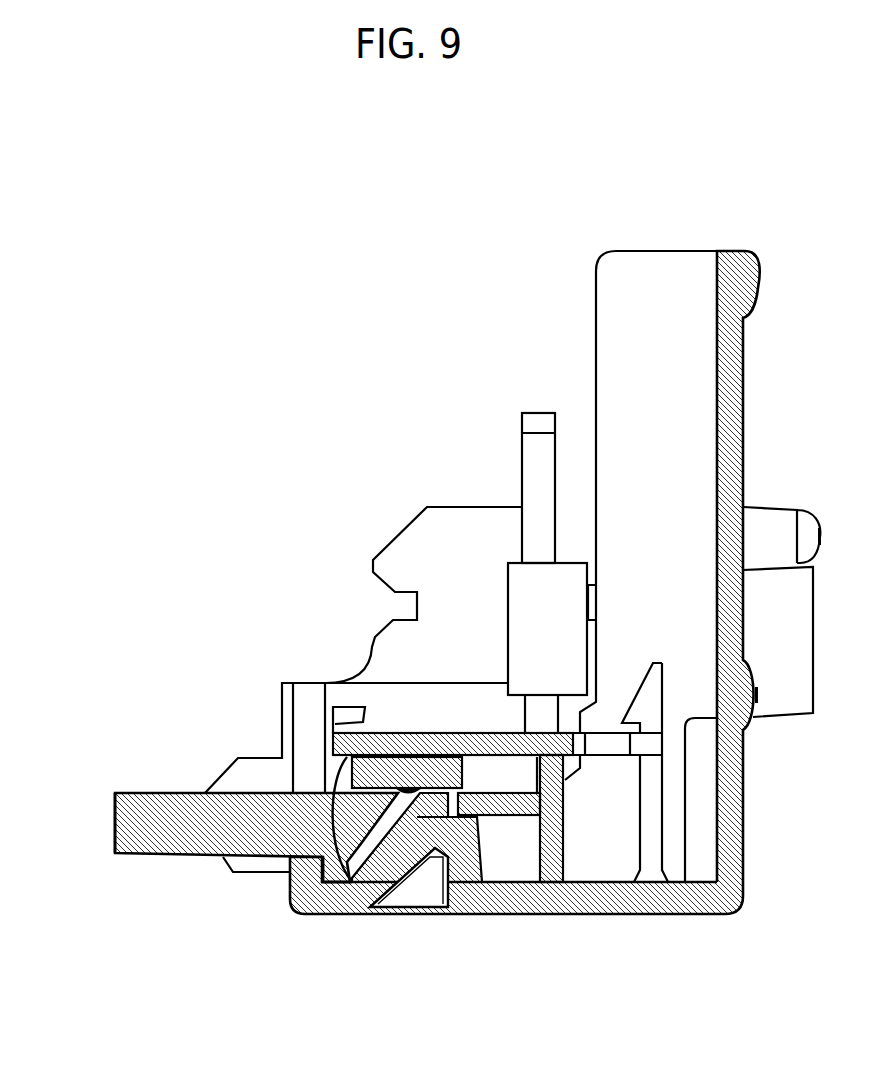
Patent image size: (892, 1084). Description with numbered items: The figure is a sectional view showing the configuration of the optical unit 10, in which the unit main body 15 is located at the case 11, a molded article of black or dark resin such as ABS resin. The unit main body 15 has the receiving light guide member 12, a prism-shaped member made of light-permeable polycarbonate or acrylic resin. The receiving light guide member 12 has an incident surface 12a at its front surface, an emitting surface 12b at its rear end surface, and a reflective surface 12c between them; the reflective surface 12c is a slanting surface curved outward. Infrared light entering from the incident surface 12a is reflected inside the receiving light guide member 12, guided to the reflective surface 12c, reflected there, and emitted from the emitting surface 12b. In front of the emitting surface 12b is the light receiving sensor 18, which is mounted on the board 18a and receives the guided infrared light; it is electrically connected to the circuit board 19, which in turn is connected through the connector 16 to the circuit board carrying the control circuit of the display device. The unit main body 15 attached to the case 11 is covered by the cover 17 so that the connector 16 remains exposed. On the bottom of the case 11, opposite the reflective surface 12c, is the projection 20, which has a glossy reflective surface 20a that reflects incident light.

The optical unit 10 is at (685, 923).
The case 11 is at (748, 905).
The receiving light guide member 12 is at (160, 828).
The incident surface 12a is at (113, 820).
The emitting surface 12b is at (368, 800).
The reflective surface 12c is at (350, 862).
The unit main body 15 is at (227, 885).
The connector 16 is at (523, 590).
The cover 17 is at (420, 683).
The light receiving sensor 18 is at (455, 838).
The board 18a is at (372, 773).
The circuit board 19 is at (408, 733).
The projection 20 is at (420, 836).
The glossy reflective surface 20a is at (390, 858).